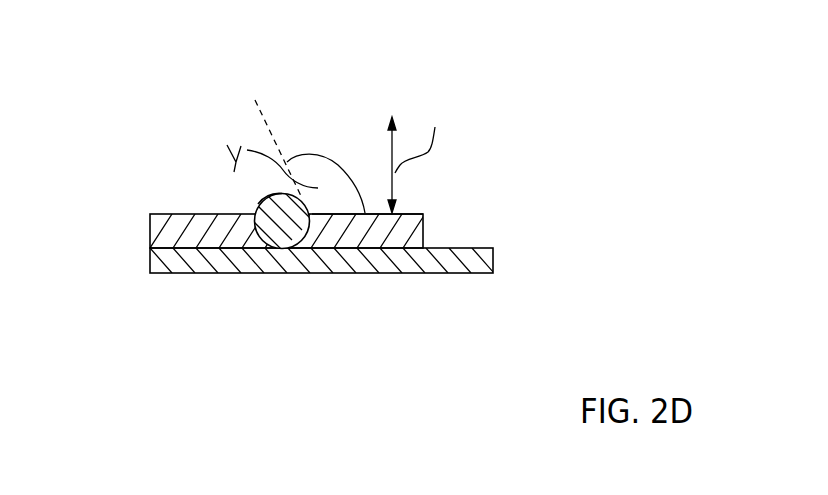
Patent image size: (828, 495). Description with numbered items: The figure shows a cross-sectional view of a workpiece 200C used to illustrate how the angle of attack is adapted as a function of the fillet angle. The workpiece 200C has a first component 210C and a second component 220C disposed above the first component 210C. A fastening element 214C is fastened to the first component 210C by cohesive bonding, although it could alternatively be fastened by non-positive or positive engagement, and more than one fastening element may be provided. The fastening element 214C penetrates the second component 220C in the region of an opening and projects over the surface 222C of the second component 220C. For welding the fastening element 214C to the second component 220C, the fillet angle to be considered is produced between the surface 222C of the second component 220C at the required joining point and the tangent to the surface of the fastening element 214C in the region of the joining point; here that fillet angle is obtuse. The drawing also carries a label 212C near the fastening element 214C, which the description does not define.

The workpiece 200C is at (357, 221).
The first component 210C is at (462, 264).
The bump surface 212C is at (258, 204).
The fastening element 214C is at (287, 235).
The second component 220C is at (152, 228).
The surface 222C is at (420, 213).